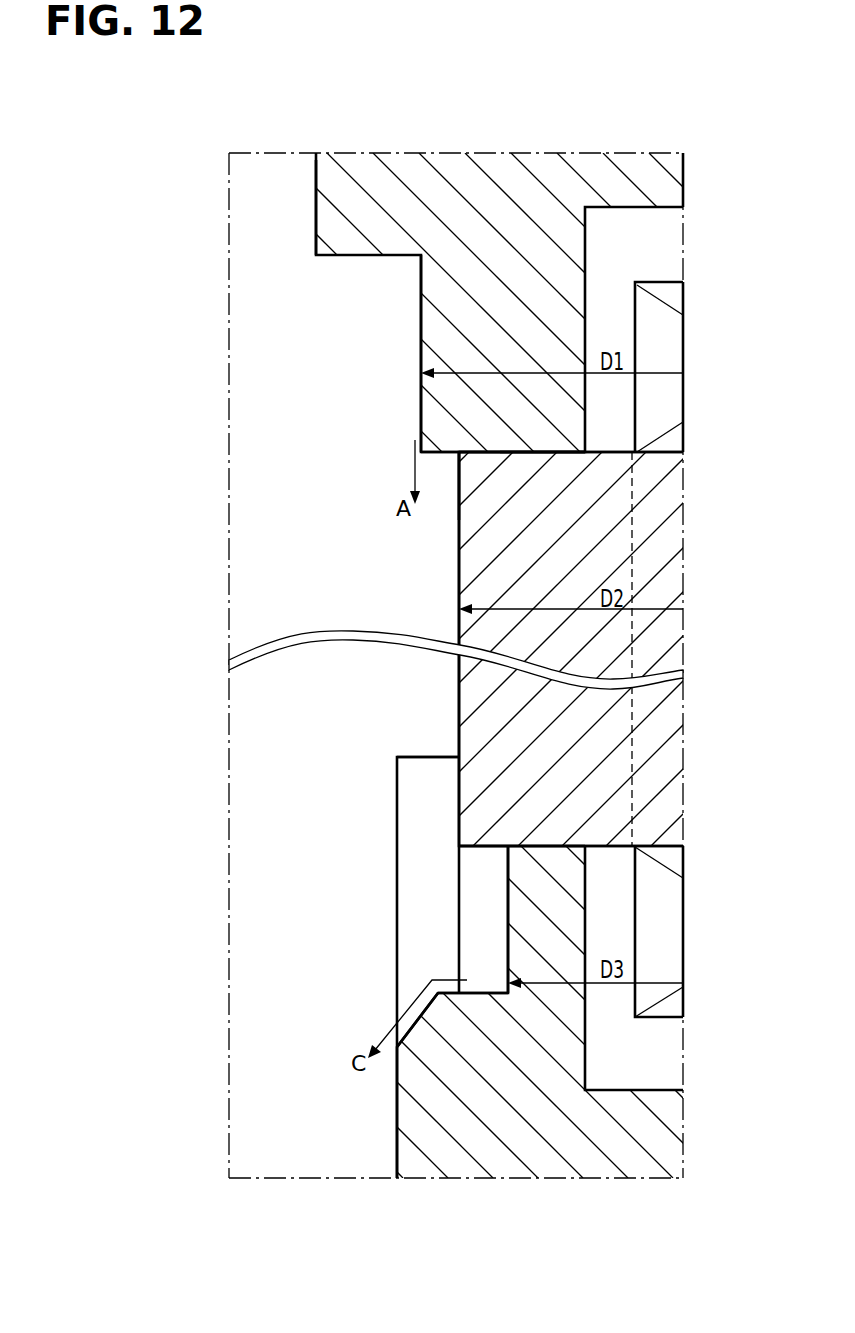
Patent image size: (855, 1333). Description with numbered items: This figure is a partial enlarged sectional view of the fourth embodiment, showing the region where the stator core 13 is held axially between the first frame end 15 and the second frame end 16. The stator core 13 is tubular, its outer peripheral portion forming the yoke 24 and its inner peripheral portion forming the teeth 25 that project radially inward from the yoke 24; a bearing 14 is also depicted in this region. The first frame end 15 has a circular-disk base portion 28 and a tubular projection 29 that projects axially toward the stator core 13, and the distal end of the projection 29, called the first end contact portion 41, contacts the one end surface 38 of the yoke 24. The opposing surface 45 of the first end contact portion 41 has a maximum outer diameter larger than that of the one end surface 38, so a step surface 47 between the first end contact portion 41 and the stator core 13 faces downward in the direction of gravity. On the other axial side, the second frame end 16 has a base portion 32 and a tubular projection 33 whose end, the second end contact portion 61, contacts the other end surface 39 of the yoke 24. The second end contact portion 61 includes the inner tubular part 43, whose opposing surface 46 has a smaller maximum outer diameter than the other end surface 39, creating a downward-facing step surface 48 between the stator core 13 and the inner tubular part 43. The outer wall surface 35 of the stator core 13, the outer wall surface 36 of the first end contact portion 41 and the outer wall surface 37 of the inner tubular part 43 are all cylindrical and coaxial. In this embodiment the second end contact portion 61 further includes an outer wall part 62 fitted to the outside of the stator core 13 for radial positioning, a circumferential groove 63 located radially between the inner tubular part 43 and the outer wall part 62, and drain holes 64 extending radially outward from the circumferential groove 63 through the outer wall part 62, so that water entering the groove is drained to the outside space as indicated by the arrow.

The stator core 13 is at (493, 718).
The bearing 14 is at (665, 352).
The first frame end 15 is at (305, 209).
The second frame end 16 is at (386, 1134).
The yoke 24 is at (573, 640).
The teeth 25 is at (663, 583).
The base portion 28 is at (597, 170).
The projection 29 is at (502, 307).
The base portion 32 is at (616, 1143).
The projection 33 is at (548, 1032).
The outer wall surface 35 is at (458, 566).
The outer wall surface 36 is at (418, 357).
The outer wall surface 37 is at (507, 930).
The one end surface 38 is at (517, 452).
The other end surface 39 is at (543, 847).
The first end contact portion 41 is at (492, 430).
The inner tubular part 43 is at (460, 815).
The opposing surface 45 is at (490, 453).
The opposing surface 46 is at (556, 846).
The step surface 47 is at (438, 453).
The step surface 48 is at (483, 847).
The second end contact portion 61 is at (386, 868).
The outer wall part 62 is at (397, 790).
The circumferential groove 63 is at (487, 993).
The drain hole 64 is at (428, 1008).